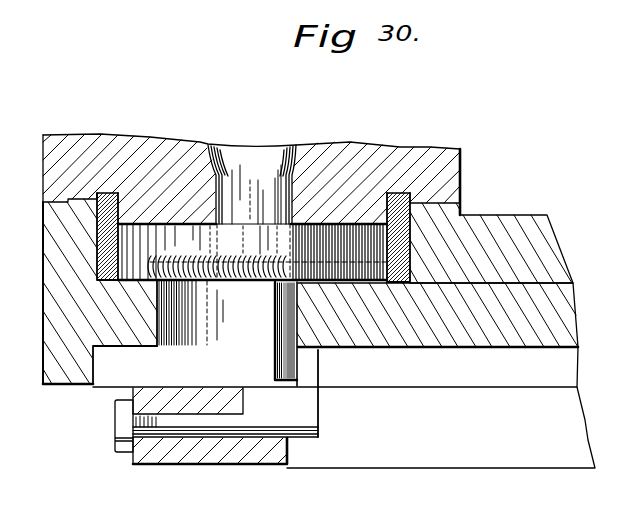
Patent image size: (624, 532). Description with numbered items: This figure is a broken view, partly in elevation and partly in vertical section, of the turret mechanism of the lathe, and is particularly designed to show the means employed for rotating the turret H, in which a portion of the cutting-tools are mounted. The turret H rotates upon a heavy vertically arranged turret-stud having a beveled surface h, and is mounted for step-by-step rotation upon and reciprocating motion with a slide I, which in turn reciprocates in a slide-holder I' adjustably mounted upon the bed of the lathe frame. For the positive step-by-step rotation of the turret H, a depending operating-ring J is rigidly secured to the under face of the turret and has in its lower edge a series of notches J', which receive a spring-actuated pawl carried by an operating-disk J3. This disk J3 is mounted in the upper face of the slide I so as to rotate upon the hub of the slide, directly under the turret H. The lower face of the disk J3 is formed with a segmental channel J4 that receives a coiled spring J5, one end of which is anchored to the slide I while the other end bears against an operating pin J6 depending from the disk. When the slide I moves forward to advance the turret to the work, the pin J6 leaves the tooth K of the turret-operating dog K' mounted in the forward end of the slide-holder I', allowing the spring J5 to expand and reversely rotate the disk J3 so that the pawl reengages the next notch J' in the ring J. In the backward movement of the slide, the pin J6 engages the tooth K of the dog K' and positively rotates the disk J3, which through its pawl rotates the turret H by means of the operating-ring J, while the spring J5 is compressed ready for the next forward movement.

The turret H is at (430, 153).
The beveled surface h is at (297, 157).
The slide I is at (100, 291).
The slide-holder I' is at (210, 465).
The operating-ring J is at (335, 235).
The notches J' is at (267, 251).
The operating-disk J3 is at (343, 232).
The segmental channel J4 is at (437, 315).
The coiled spring J5 is at (151, 252).
The operating pin J6 is at (275, 318).
The tooth K is at (344, 407).
The turret-operating dog K' is at (216, 420).